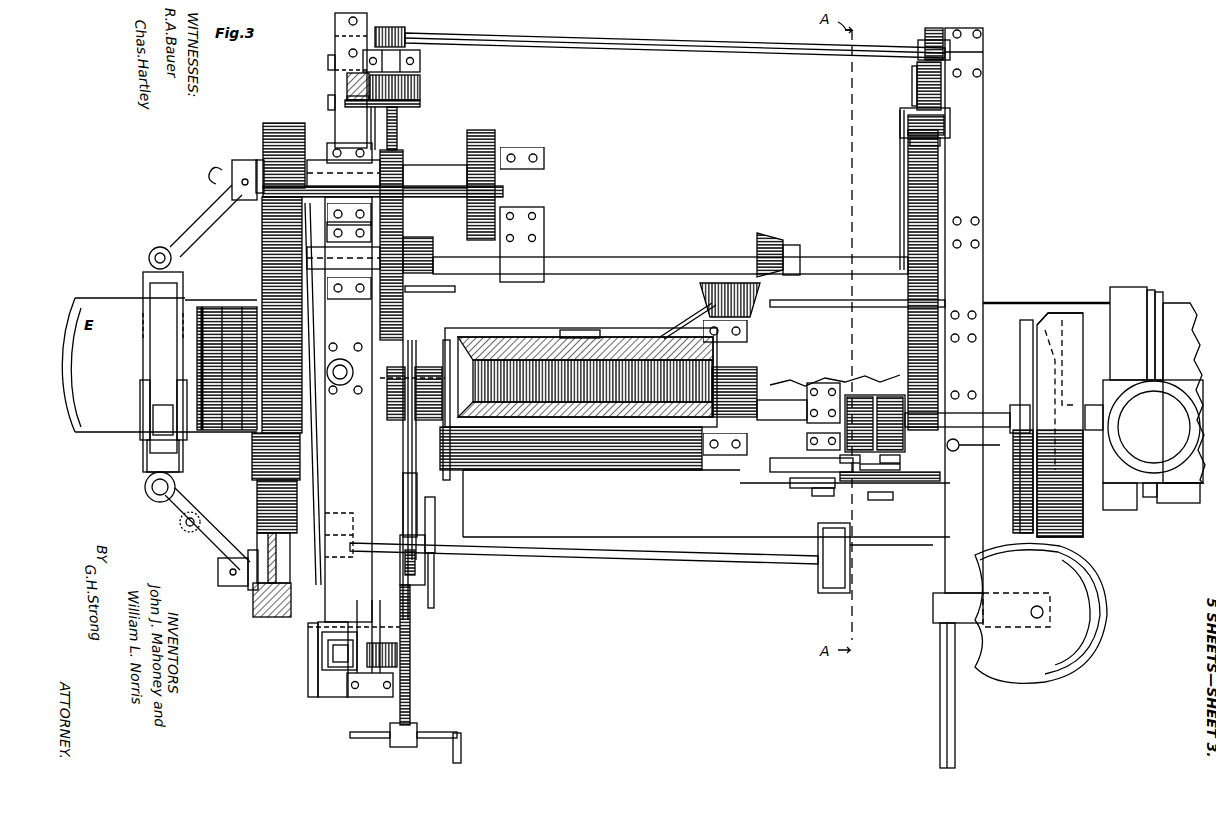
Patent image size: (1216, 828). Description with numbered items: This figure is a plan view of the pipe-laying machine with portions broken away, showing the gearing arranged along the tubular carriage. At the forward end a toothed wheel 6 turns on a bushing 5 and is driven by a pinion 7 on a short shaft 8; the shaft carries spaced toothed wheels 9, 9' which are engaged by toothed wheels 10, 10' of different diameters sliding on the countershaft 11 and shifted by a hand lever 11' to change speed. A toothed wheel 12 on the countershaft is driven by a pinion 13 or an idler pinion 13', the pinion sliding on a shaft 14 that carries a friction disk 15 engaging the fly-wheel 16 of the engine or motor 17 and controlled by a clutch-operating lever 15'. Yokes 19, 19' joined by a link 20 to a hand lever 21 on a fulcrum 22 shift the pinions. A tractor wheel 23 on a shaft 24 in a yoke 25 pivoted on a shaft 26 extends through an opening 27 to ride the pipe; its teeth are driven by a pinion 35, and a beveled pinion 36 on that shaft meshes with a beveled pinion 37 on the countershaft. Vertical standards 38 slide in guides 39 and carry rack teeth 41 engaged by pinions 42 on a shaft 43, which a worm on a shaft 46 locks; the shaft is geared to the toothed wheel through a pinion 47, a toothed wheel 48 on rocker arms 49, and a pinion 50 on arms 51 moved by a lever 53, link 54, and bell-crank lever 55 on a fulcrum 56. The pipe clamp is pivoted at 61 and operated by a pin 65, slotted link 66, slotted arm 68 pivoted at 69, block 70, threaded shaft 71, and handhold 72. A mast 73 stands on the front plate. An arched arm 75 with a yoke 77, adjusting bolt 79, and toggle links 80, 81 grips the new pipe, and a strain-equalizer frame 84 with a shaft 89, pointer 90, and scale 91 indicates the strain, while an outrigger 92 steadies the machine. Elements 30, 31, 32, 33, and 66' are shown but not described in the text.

The bushing 5 is at (262, 278).
The toothed wheel 6 is at (263, 234).
The pinion 7 is at (265, 157).
The short shaft 8 is at (430, 178).
The toothed wheel 9 is at (400, 238).
The toothed wheel 9' is at (488, 172).
The toothed wheel 10 is at (369, 234).
The toothed wheel 10' is at (426, 244).
The countershaft 11 is at (670, 251).
The hand lever 11' is at (430, 308).
The toothed wheel 12 is at (908, 240).
The pinion 13 is at (875, 405).
The idler pinion 13' is at (860, 401).
The shaft 14 is at (925, 410).
The friction disk 15 is at (1010, 426).
The clutch-operating lever 15' is at (974, 458).
The fly-wheel 16 is at (1050, 316).
The engine or motor 17 is at (1145, 398).
The yoke 19 is at (901, 451).
The yoke 19' is at (836, 453).
The link 20 is at (878, 466).
The hand lever 21 is at (800, 462).
The fulcrum 22 is at (792, 486).
The tractor wheel 23 is at (522, 344).
The shaft 24 is at (572, 344).
The yoke 25 is at (568, 336).
The shaft 26 is at (760, 358).
The opening 27 is at (666, 332).
The frame bar 30 is at (455, 478).
The rod 31 is at (548, 553).
The bracket 32 is at (335, 560).
The block 33 is at (818, 575).
The pinion 35 is at (800, 378).
The beveled pinion 36 is at (700, 296).
The beveled pinion 37 is at (765, 245).
The vertical standard 38 is at (347, 78).
The guide 39 is at (347, 92).
The rack teeth 41 is at (318, 680).
The pinion 42 is at (420, 86).
The shaft 43 is at (398, 120).
The shaft 46 is at (388, 30).
The pinion 47 is at (927, 33).
The toothed wheel 48 is at (918, 77).
The rocker arms 49 is at (918, 90).
The pinion 50 is at (912, 142).
The arms 51 is at (948, 124).
The lever 53 is at (900, 197).
The link 54 is at (925, 476).
The bell-crank lever 55 is at (880, 500).
The fulcrum 56 is at (820, 496).
The pivot 61 is at (905, 124).
The pivot pin 65 is at (434, 532).
The slotted link 66 is at (451, 505).
The rod 66' is at (452, 584).
The slotted arm 68 is at (420, 585).
The pivot 69 is at (410, 366).
The block 70 is at (412, 558).
The threaded shaft 71 is at (411, 688).
The handhold 72 is at (442, 735).
The mast 73 is at (340, 360).
The arched arm 75 is at (157, 352).
The yoke 77 is at (143, 283).
The adjusting bolt 79 is at (148, 259).
The link 80 is at (143, 440).
The short link 81 is at (160, 390).
The frame 84 is at (203, 200).
The shaft 89 is at (215, 560).
The indicator or pointer 90 is at (183, 527).
The scale 91 is at (200, 522).
The outrigger 92 is at (958, 703).